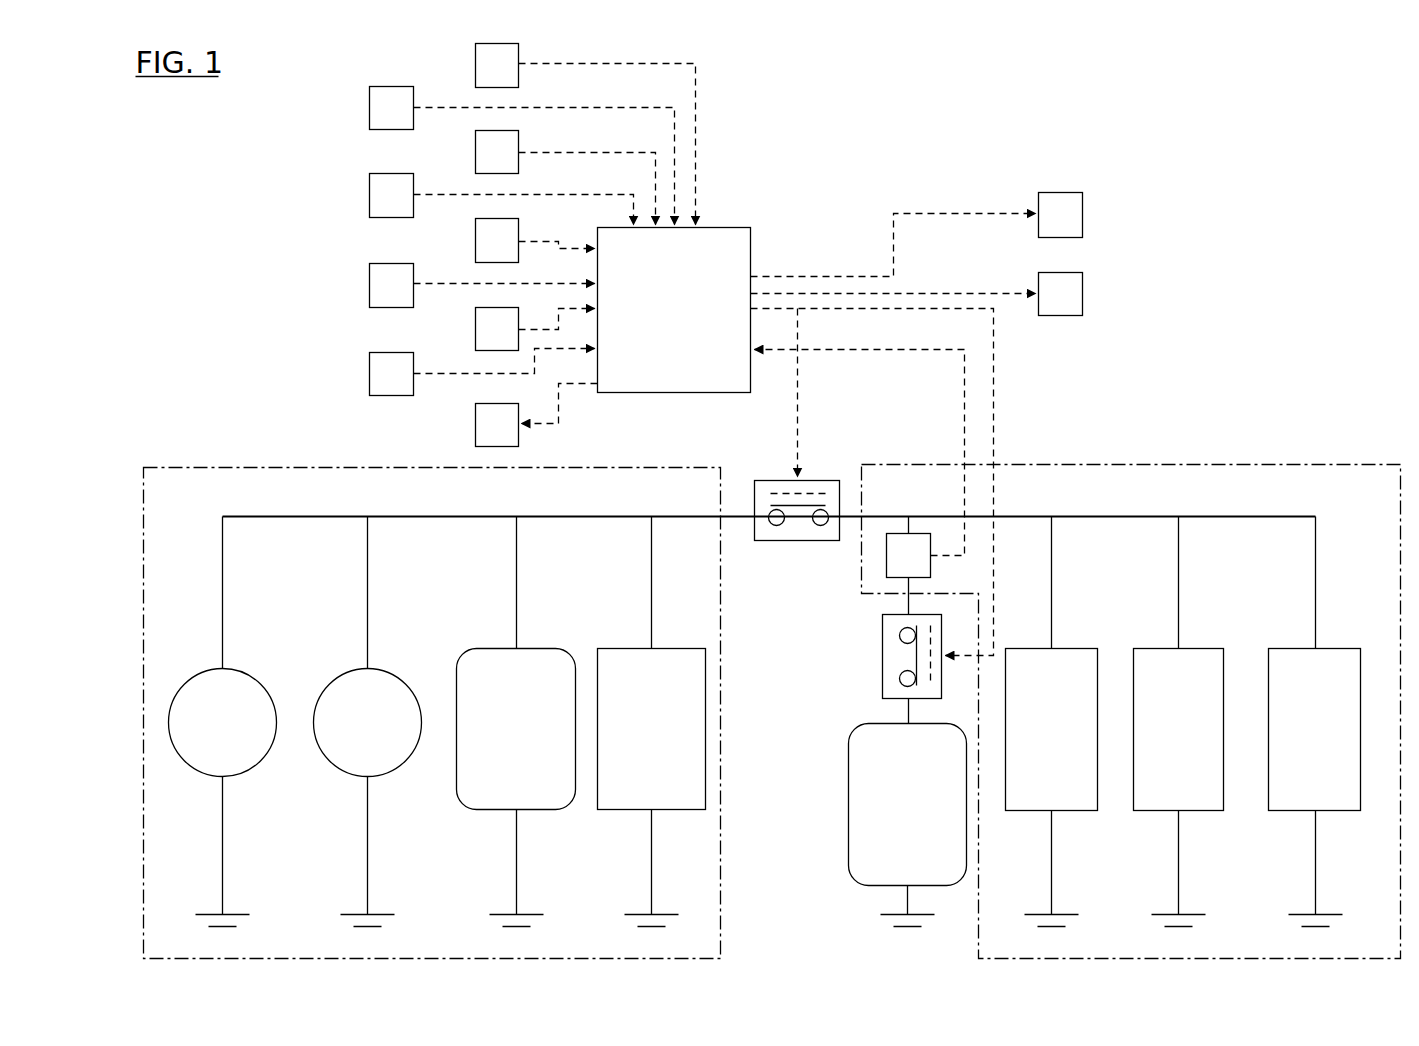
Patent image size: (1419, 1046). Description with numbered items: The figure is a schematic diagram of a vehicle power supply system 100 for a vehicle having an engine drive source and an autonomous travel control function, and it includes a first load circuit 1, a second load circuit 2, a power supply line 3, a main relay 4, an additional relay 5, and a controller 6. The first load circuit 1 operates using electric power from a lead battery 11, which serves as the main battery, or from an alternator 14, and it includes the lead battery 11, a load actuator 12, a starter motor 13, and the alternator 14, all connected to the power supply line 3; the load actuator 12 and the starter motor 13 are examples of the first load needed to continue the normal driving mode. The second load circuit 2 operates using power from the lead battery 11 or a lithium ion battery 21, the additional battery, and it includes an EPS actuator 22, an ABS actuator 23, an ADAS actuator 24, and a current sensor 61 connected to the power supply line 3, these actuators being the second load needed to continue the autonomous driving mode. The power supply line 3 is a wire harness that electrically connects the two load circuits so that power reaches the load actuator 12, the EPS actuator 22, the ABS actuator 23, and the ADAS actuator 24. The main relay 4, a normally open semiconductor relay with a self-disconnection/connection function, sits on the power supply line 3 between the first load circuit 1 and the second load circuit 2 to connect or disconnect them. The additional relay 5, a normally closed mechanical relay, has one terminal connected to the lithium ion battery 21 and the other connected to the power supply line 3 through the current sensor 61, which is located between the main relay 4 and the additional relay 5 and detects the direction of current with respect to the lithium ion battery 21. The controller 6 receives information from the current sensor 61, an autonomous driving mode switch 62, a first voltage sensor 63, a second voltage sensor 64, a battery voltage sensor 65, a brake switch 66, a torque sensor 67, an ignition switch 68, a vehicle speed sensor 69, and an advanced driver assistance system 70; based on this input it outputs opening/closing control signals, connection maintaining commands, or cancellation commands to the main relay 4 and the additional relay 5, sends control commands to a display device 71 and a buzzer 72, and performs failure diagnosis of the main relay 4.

The power supply system 100 is at (1282, 130).
The first load circuit 1 is at (222, 462).
The second load circuit 2 is at (1363, 459).
The power supply line 3 is at (690, 514).
The main relay 4 is at (823, 479).
The additional relay 5 is at (882, 655).
The controller 6 is at (736, 226).
The lead battery 11 is at (541, 647).
The load actuator 12 is at (679, 647).
The starter motor 13 is at (250, 670).
The alternator 14 is at (387, 670).
The lithium ion battery 21 is at (848, 797).
The EPS actuator 22 is at (1079, 647).
The ABS actuator 23 is at (1214, 647).
The ADAS actuator 24 is at (1344, 647).
The current sensor 61 is at (886, 563).
The autonomous driving mode switch 62 is at (369, 109).
The first voltage sensor 63 is at (369, 196).
The second voltage sensor 64 is at (369, 286).
The battery voltage sensor 65 is at (369, 375).
The brake switch 66 is at (475, 66).
The torque sensor 67 is at (475, 152).
The ignition switch 68 is at (475, 241).
The vehicle speed sensor 69 is at (475, 331).
The advanced driver assistance system 70 is at (475, 426).
The display device 71 is at (1082, 214).
The buzzer 72 is at (1082, 293).